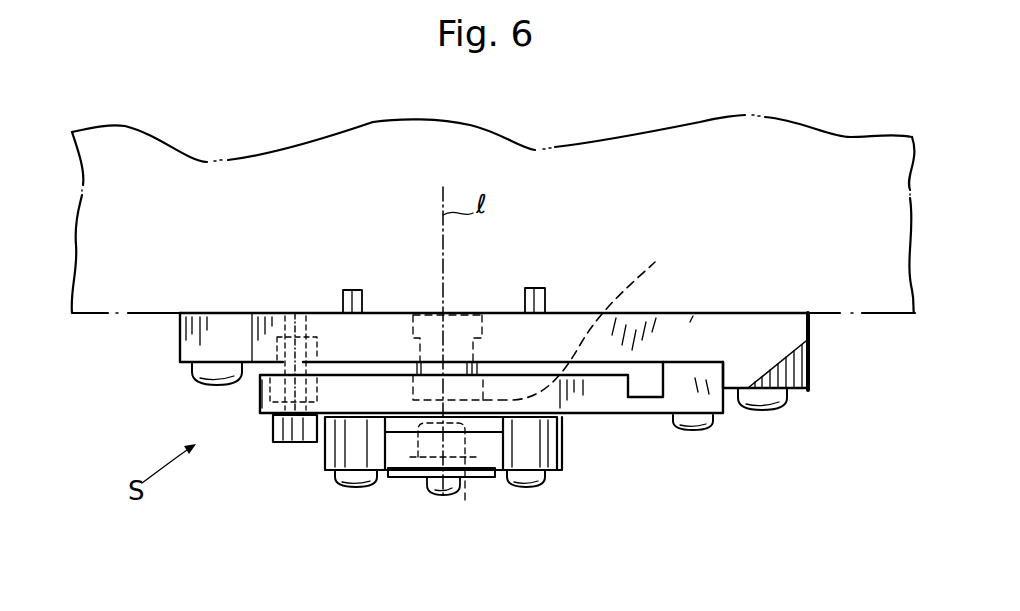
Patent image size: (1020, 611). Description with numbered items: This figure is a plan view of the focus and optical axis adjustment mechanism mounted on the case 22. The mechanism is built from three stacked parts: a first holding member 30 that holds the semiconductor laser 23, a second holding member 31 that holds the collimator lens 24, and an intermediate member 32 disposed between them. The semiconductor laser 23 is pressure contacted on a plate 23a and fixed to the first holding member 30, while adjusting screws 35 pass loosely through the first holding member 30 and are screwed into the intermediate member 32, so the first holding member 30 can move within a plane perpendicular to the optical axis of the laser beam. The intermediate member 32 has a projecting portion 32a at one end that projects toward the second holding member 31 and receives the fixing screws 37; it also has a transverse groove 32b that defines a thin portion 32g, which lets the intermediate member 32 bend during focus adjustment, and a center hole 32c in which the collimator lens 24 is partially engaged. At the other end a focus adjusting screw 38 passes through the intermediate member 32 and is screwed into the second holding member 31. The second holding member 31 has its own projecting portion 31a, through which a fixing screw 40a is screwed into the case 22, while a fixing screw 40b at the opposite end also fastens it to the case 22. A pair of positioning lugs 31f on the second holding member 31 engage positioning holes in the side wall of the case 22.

The case 22 is at (535, 152).
The semiconductor laser 23 is at (465, 500).
The plate 23a is at (397, 478).
The collimator lens 24 is at (427, 362).
The first holding member 30 is at (325, 453).
The second holding member 31 is at (690, 330).
The projecting portion 31a is at (790, 343).
The positioning lugs 31f is at (345, 298).
The intermediate member 32 is at (597, 410).
The projecting portion 32a is at (725, 407).
The groove 32b is at (650, 392).
The center hole 32c is at (586, 317).
The thin portion 32g is at (628, 412).
The adjusting screws 35 is at (340, 488).
The fixing screws 37 is at (692, 431).
The focus adjusting screw 38 is at (273, 428).
The fixing screw 40a is at (780, 405).
The fixing screw 40b is at (212, 385).